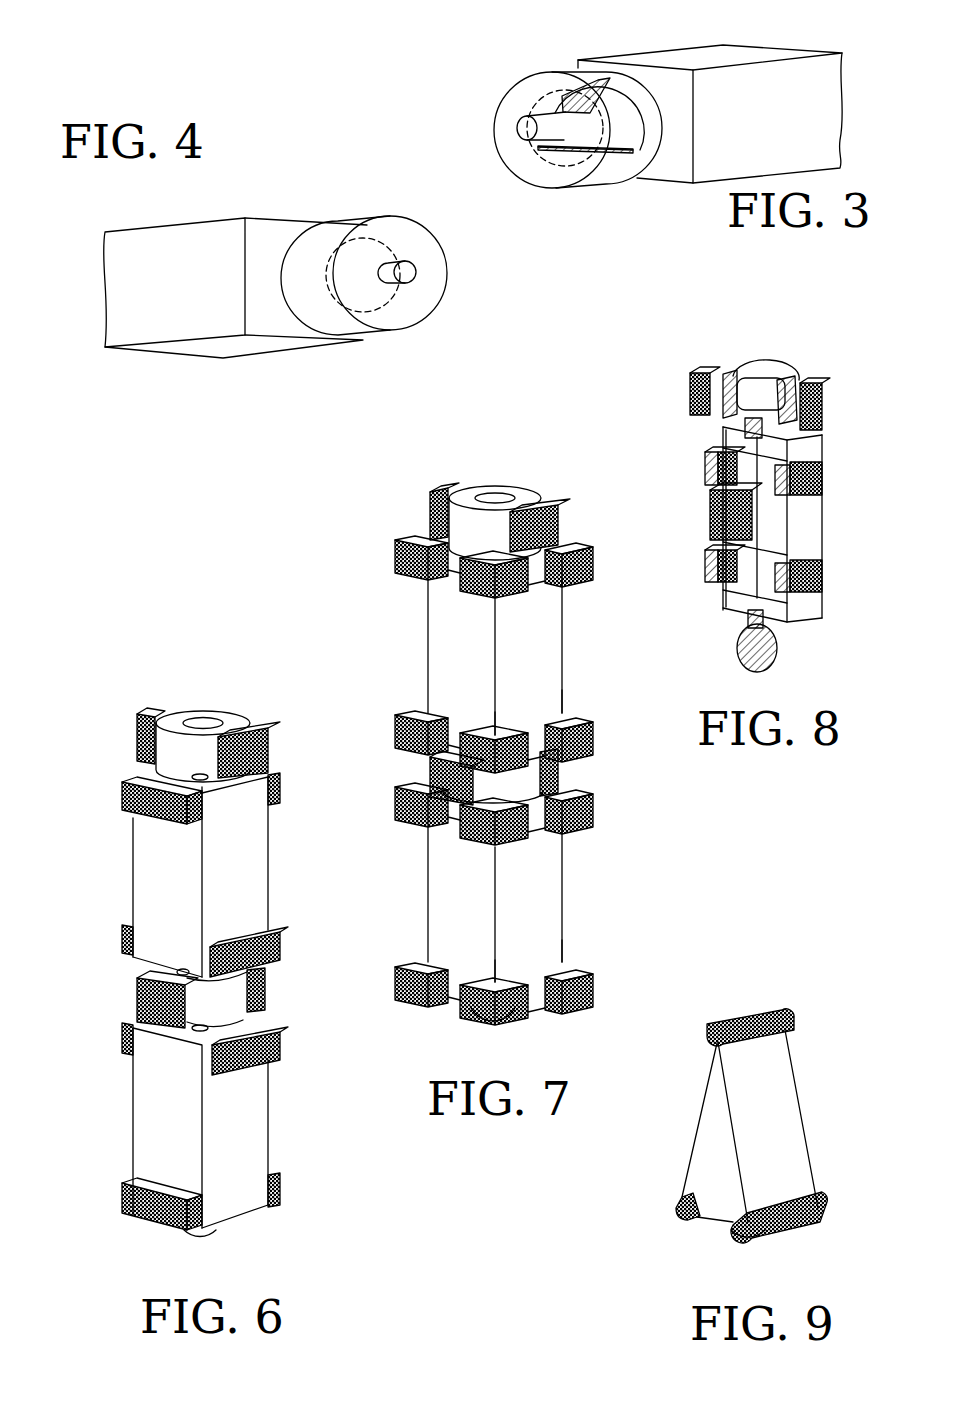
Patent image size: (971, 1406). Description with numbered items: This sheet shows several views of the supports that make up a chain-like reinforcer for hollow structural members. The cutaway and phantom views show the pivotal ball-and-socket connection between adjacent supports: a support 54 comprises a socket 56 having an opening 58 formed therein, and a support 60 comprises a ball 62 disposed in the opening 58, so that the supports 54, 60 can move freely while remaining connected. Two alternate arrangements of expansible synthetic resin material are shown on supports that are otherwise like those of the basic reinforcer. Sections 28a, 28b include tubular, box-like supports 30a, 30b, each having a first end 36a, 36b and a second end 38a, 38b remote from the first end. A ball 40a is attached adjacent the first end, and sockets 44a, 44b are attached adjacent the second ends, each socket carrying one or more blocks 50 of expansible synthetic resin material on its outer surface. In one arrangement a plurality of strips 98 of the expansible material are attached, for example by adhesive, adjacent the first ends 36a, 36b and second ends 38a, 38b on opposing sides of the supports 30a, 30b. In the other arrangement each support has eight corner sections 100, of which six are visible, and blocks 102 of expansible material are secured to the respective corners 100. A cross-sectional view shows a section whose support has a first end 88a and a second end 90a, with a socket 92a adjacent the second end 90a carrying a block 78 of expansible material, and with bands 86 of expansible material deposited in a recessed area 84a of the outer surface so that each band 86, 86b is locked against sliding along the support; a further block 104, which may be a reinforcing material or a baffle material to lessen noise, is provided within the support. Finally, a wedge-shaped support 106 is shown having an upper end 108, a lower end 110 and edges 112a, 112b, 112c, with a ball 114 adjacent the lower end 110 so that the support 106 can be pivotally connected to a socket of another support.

In FIG. 3, the support 54 is at (700, 53).
In FIG. 3, the socket 56 is at (540, 75).
In FIG. 4, the socket 56 is at (410, 217).
In FIG. 3, the opening 58 is at (538, 147).
In FIG. 4, the support 60 is at (147, 317).
In FIG. 3, the ball 62 is at (595, 135).
In FIG. 4, the ball 62 is at (320, 267).
In FIG. 6, the section 28a is at (188, 1135).
In FIG. 7, the section 28a is at (545, 948).
In FIG. 6, the section 28b is at (189, 823).
In FIG. 7, the section 28b is at (481, 590).
In FIG. 6, the support 30a is at (152, 1075).
In FIG. 7, the support 30a is at (537, 890).
In FIG. 6, the support 30b is at (153, 905).
In FIG. 7, the support 30b is at (537, 640).
In FIG. 6, the first end 36a is at (240, 1198).
In FIG. 7, the first end 36a is at (552, 943).
In FIG. 6, the first end 36b is at (157, 952).
In FIG. 7, the first end 36b is at (553, 693).
In FIG. 6, the second end 38a is at (243, 1107).
In FIG. 7, the second end 38a is at (553, 833).
In FIG. 6, the second end 38b is at (243, 830).
In FIG. 7, the second end 38b is at (427, 600).
In FIG. 6, the ball 40a is at (213, 1253).
In FIG. 7, the ball 40a is at (510, 1027).
In FIG. 7, the socket 44a is at (527, 785).
In FIG. 6, the socket 44b is at (235, 722).
In FIG. 7, the socket 44b is at (527, 497).
In FIG. 6, the blocks of expansible synthetic resin material 50 is at (135, 735).
In FIG. 7, the blocks of expansible synthetic resin material 50 is at (445, 488).
In FIG. 6, the strips 98 is at (280, 788).
In FIG. 7, the corner sections 100 is at (428, 578).
In FIG. 7, the blocks of expansible synthetic resin material 102 is at (410, 553).
In FIG. 8, the block of expansible synthetic resin material 78 is at (690, 402).
In FIG. 8, the recessed area 84a is at (820, 583).
In FIG. 8, the band of expansible synthetic resin material 86 is at (817, 477).
In FIG. 8, the side block section 86b is at (775, 502).
In FIG. 8, the first end 88a is at (810, 610).
In FIG. 8, the second end 90a is at (815, 447).
In FIG. 8, the socket 92a is at (790, 373).
In FIG. 8, the block 104 is at (710, 508).
In FIG. 9, the support 106 is at (739, 1153).
In FIG. 9, the upper end 108 is at (773, 1070).
In FIG. 9, the lower end 110 is at (797, 1173).
In FIG. 9, the edge 112a is at (713, 1043).
In FIG. 9, the edge 112b is at (678, 1195).
In FIG. 9, the edge 112c is at (737, 1223).
In FIG. 9, the ball 114 is at (762, 1255).